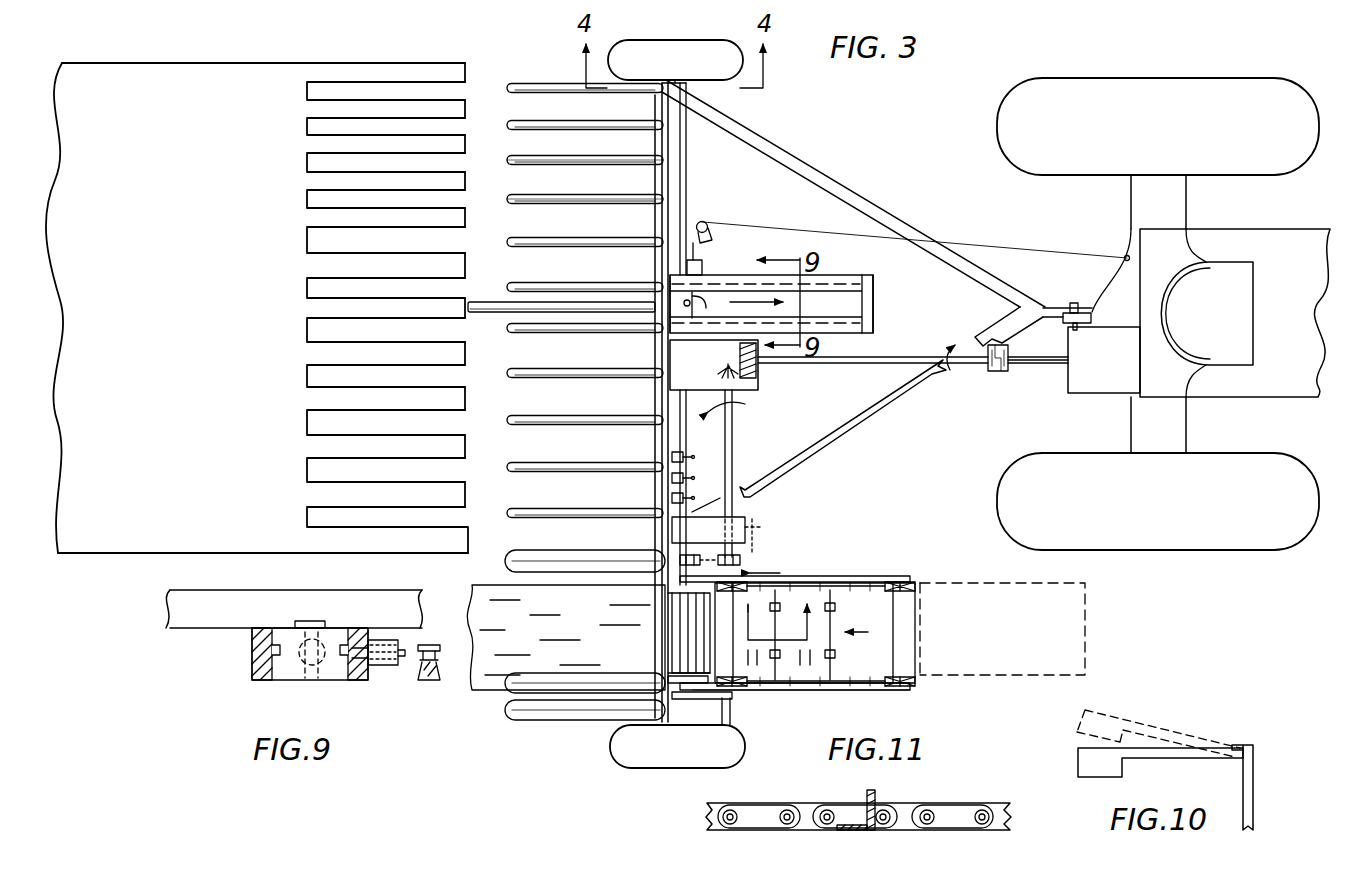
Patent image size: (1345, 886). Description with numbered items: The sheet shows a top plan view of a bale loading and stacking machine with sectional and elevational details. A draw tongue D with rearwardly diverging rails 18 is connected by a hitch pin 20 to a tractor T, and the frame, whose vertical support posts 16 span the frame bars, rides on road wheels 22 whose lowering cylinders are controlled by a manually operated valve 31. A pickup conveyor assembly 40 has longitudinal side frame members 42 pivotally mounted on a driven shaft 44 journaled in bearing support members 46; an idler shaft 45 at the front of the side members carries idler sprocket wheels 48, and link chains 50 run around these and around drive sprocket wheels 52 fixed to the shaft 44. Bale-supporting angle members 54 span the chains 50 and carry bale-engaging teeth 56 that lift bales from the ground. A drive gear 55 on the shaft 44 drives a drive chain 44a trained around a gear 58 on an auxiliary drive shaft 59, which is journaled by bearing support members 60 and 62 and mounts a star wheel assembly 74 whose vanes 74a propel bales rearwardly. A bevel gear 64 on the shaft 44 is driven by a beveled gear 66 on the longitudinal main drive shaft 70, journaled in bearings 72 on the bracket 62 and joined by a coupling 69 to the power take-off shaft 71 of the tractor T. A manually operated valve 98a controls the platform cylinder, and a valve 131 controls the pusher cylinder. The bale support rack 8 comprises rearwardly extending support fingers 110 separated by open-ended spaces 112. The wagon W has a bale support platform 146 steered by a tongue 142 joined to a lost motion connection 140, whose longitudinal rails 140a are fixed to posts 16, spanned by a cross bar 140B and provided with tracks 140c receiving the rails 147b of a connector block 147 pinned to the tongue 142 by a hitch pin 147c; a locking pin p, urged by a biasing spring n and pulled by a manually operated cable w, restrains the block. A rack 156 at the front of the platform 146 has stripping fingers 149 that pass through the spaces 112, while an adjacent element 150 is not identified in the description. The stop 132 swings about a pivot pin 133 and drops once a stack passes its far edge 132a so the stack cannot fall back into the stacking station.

In FIG. 3, the bale support rack 8 is at (552, 75).
In FIG. 9, the vertical support posts 16 is at (178, 626).
In FIG. 3, the rearwardly diverging rails 18 is at (882, 205).
In FIG. 3, the hitch pin 20 is at (1076, 303).
In FIG. 3, the road wheels 22 is at (661, 48).
In FIG. 3, the manually operated valve 31 is at (688, 478).
In FIG. 3, the pickup conveyor assembly 40 is at (783, 577).
In FIG. 3, the longitudinal side frame members 42 is at (828, 585).
In FIG. 3, the driven shaft 44 is at (728, 699).
In FIG. 3, the drive chain 44a is at (708, 530).
In FIG. 3, the idler shaft 45 is at (908, 573).
In FIG. 3, the bearing support members 46 is at (693, 690).
In FIG. 3, the idler sprocket wheels 48 is at (913, 597).
In FIG. 3, the link chains 50 is at (846, 687).
In FIG. 3, the drive sprocket wheels 52 is at (767, 581).
In FIG. 3, the bale-supporting angle members 54 is at (837, 618).
In FIG. 11, the bale-supporting angle members 54 is at (876, 797).
In FIG. 3, the drive sprocket 55 is at (742, 558).
In FIG. 3, the bale-engaging teeth 56 is at (836, 596).
In FIG. 11, the bale-engaging teeth 56 is at (838, 832).
In FIG. 3, the gear 58 is at (680, 560).
In FIG. 3, the auxiliary drive shaft 59 is at (670, 588).
In FIG. 3, the bearing support member 60 is at (673, 573).
In FIG. 3, the bearing support member 62 is at (742, 404).
In FIG. 3, the bevel gear 64 is at (728, 370).
In FIG. 3, the complementally beveled gear 66 is at (758, 371).
In FIG. 3, the coupling 69 is at (995, 372).
In FIG. 3, the longitudinal main drive shaft 70 is at (856, 363).
In FIG. 3, the power take-off shaft 71 is at (1035, 364).
In FIG. 3, the bearings 72 is at (762, 390).
In FIG. 3, the star wheel type assembly 74 is at (680, 657).
In FIG. 3, the vanes 74a is at (682, 633).
In FIG. 3, the manually operated valve 98a is at (688, 494).
In FIG. 3, the support fingers 110 is at (586, 251).
In FIG. 3, the open-ended spaces 112 is at (540, 201).
In FIG. 3, the valve 131 is at (683, 452).
In FIG. 10, the stop 132 is at (1170, 748).
In FIG. 10, the far edge of stop 132a is at (1158, 697).
In FIG. 10, the pivot pin 133 is at (1254, 735).
In FIG. 3, the lost motion connection mechanism 140 is at (738, 275).
In FIG. 3, the longitudinal rails 140a is at (834, 276).
In FIG. 9, the longitudinal rails 140a is at (255, 647).
In FIG. 3, the cross bar 140B is at (873, 306).
In FIG. 9, the tracks 140c is at (252, 660).
In FIG. 3, the wagon draw tongue 142 is at (494, 313).
In FIG. 3, the bale support platform 146 is at (171, 425).
In FIG. 9, the connector block 147 is at (288, 681).
In FIG. 9, the longitudinal rails 147b is at (254, 670).
In FIG. 3, the hitch pin 147c is at (704, 290).
In FIG. 9, the hitch pin 147c is at (320, 621).
In FIG. 3, the stripping fingers 149 is at (358, 553).
In FIG. 3, the divider tooth 150 is at (427, 518).
In FIG. 3, the rack 156 is at (398, 56).
In FIG. 3, the wagon W is at (322, 53).
In FIG. 3, the draw tongue D is at (948, 224).
In FIG. 3, the tractor T is at (1126, 208).
In FIG. 3, the manually operated cable w is at (1000, 241).
In FIG. 9, the manually operated cable w is at (455, 652).
In FIG. 9, the locking pin p is at (395, 672).
In FIG. 9, the biasing spring n is at (397, 646).